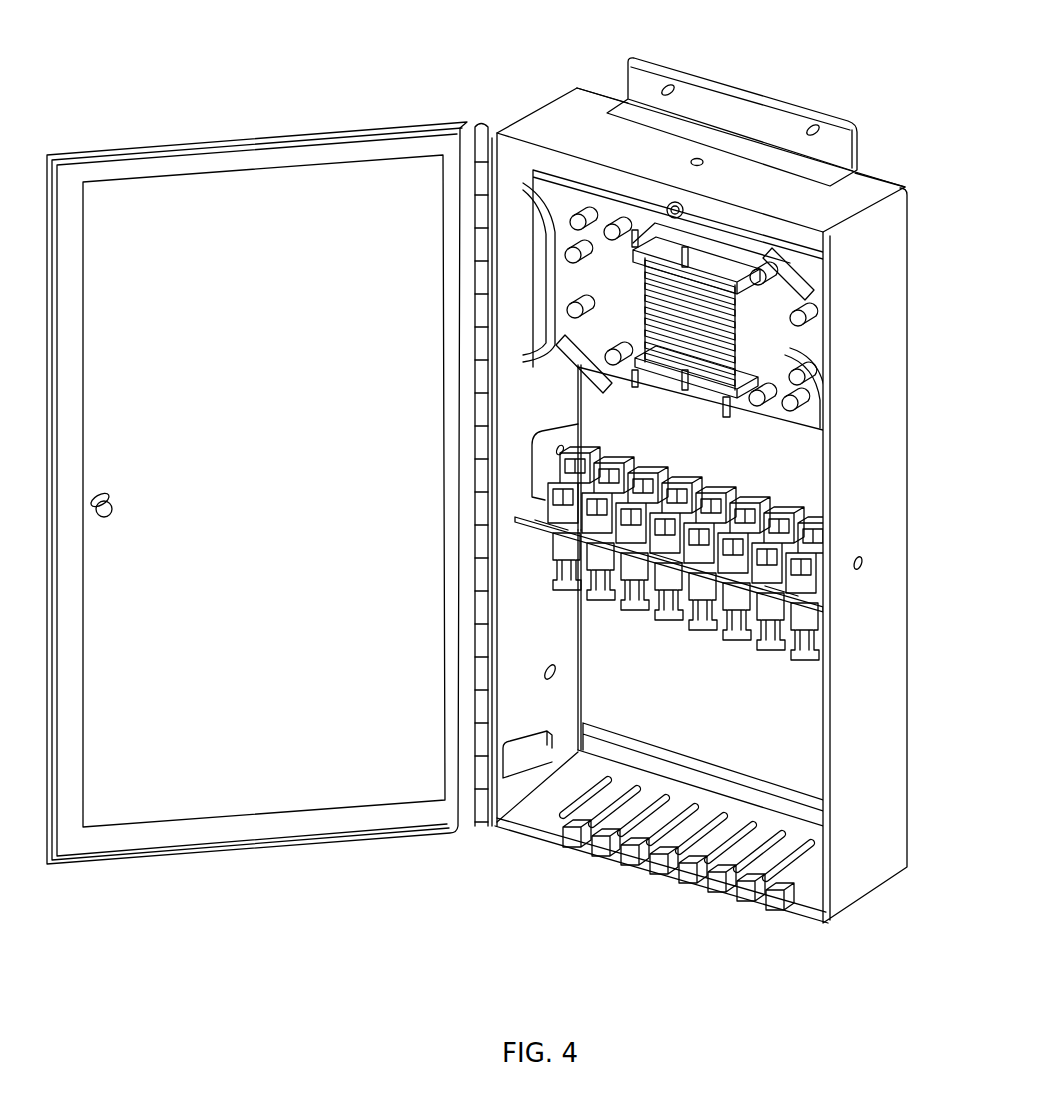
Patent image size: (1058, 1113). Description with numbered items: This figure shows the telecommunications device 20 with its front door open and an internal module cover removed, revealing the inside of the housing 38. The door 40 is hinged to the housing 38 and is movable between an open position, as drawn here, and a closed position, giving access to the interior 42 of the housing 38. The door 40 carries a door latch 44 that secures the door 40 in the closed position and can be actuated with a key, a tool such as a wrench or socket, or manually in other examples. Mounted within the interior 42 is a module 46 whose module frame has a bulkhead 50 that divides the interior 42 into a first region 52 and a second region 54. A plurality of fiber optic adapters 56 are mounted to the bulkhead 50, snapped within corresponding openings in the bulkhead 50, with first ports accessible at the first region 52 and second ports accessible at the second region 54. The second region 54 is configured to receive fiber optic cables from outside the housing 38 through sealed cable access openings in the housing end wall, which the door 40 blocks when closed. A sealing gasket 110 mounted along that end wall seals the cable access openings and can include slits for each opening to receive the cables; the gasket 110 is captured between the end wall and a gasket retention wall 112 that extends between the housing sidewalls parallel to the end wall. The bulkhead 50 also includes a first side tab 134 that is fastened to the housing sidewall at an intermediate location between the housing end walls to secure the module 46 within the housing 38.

The telecommunications device 20 is at (497, 103).
The housing 38 is at (912, 816).
The door 40 is at (170, 862).
The interior 42 is at (734, 715).
The door latch 44 is at (106, 492).
The module 46 is at (773, 340).
The bulkhead 50 is at (520, 516).
The first region 52 is at (648, 438).
The second region 54 is at (598, 658).
The fiber optic adapters 56 is at (777, 516).
The sealing gasket 110 is at (792, 893).
The gasket retention wall 112 is at (545, 788).
The first side tab 134 is at (548, 459).